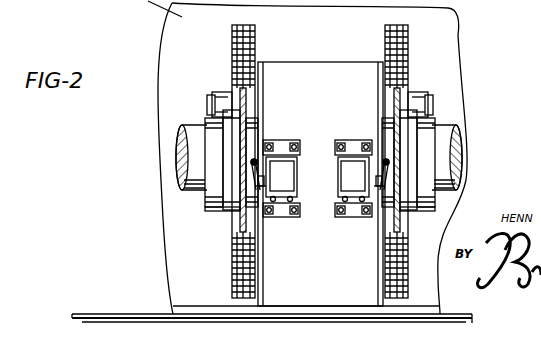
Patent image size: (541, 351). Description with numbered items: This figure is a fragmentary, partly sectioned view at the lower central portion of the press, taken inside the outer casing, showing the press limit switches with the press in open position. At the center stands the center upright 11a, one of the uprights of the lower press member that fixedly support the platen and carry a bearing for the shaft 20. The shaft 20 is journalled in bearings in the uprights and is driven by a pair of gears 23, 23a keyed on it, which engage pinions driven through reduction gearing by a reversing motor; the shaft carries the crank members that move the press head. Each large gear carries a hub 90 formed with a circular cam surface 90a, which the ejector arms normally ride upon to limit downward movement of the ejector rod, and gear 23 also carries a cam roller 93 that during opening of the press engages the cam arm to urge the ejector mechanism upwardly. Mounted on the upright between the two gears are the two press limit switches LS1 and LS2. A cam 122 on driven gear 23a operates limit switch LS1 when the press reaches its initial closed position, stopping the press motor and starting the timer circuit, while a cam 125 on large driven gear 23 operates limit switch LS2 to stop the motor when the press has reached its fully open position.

The center upright 11a is at (305, 63).
The gear 23a is at (233, 32).
The gear 23 is at (408, 40).
The cam roller 93 is at (219, 92).
The shaft 20 is at (443, 140).
The hub 90 is at (233, 143).
The circular cam surface 90a is at (428, 208).
The limit switch LS1 is at (276, 166).
The limit switch LS2 is at (344, 165).
The cam 122 is at (250, 178).
The cam 125 is at (395, 164).